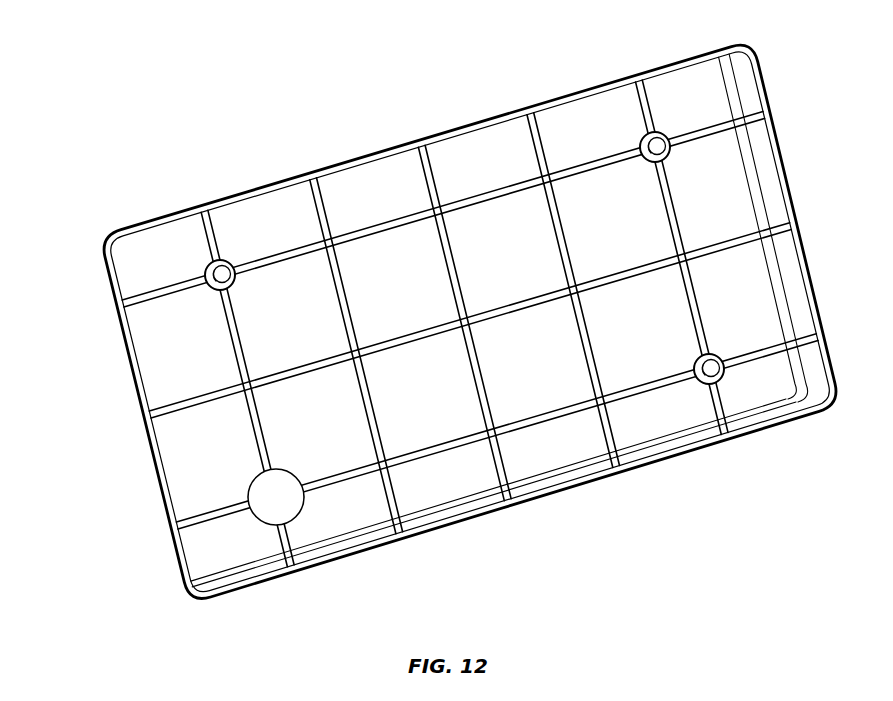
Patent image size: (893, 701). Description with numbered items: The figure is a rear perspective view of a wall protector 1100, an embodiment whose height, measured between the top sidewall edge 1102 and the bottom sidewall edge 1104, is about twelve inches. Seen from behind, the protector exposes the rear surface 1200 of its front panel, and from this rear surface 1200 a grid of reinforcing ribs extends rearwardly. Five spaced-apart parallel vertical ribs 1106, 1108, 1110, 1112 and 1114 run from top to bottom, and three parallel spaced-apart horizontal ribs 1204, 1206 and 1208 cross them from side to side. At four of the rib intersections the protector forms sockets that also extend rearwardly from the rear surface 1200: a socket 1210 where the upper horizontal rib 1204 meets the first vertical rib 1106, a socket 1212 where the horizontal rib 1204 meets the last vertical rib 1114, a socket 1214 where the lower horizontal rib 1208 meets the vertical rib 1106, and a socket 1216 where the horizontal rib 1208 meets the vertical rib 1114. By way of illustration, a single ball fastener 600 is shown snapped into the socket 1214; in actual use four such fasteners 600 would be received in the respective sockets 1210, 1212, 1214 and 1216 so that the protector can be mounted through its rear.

The wall protector 1100 is at (128, 528).
The top sidewall edge 1102 is at (427, 144).
The bottom sidewall edge 1104 is at (443, 529).
The vertical rib 1106 is at (243, 345).
The vertical rib 1108 is at (345, 310).
The vertical rib 1110 is at (458, 282).
The vertical rib 1112 is at (565, 250).
The vertical rib 1114 is at (677, 220).
The rear surface 1200 is at (470, 323).
The horizontal rib 1204 is at (340, 230).
The horizontal rib 1206 is at (383, 350).
The horizontal rib 1208 is at (455, 444).
The socket 1210 is at (208, 292).
The socket 1212 is at (662, 133).
The socket 1216 is at (715, 354).
The ball fastener 600 is at (283, 470).
The socket 1214 is at (268, 512).